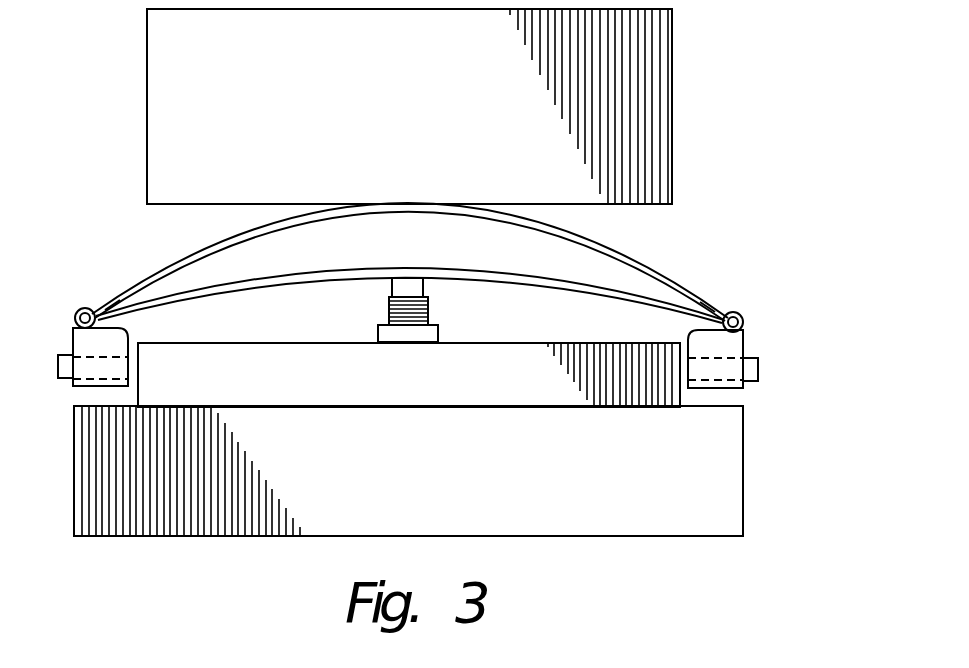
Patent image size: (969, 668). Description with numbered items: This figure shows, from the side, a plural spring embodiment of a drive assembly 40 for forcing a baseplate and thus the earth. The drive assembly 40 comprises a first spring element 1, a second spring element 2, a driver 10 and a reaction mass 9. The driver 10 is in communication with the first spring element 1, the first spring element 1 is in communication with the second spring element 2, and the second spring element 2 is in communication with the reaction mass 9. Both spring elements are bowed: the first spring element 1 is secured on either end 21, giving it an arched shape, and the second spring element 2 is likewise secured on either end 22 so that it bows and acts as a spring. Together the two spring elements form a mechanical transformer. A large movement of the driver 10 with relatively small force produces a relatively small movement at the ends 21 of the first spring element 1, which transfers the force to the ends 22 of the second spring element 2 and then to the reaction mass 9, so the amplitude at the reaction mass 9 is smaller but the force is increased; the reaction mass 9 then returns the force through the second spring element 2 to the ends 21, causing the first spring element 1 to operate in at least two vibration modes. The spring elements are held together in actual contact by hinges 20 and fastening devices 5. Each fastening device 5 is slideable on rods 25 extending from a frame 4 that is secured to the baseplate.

The drive assembly 40 is at (745, 35).
The reaction mass 9 is at (672, 100).
The second spring element 2 is at (660, 260).
The first spring element 1 is at (478, 272).
The ends of the first spring element 21 is at (125, 302).
The ends of the second spring element 22 is at (98, 308).
The hinges 20 is at (68, 318).
The fastening devices 5 is at (80, 349).
The rods 25 is at (57, 367).
The frame 4 is at (330, 340).
The driver 10 is at (446, 313).